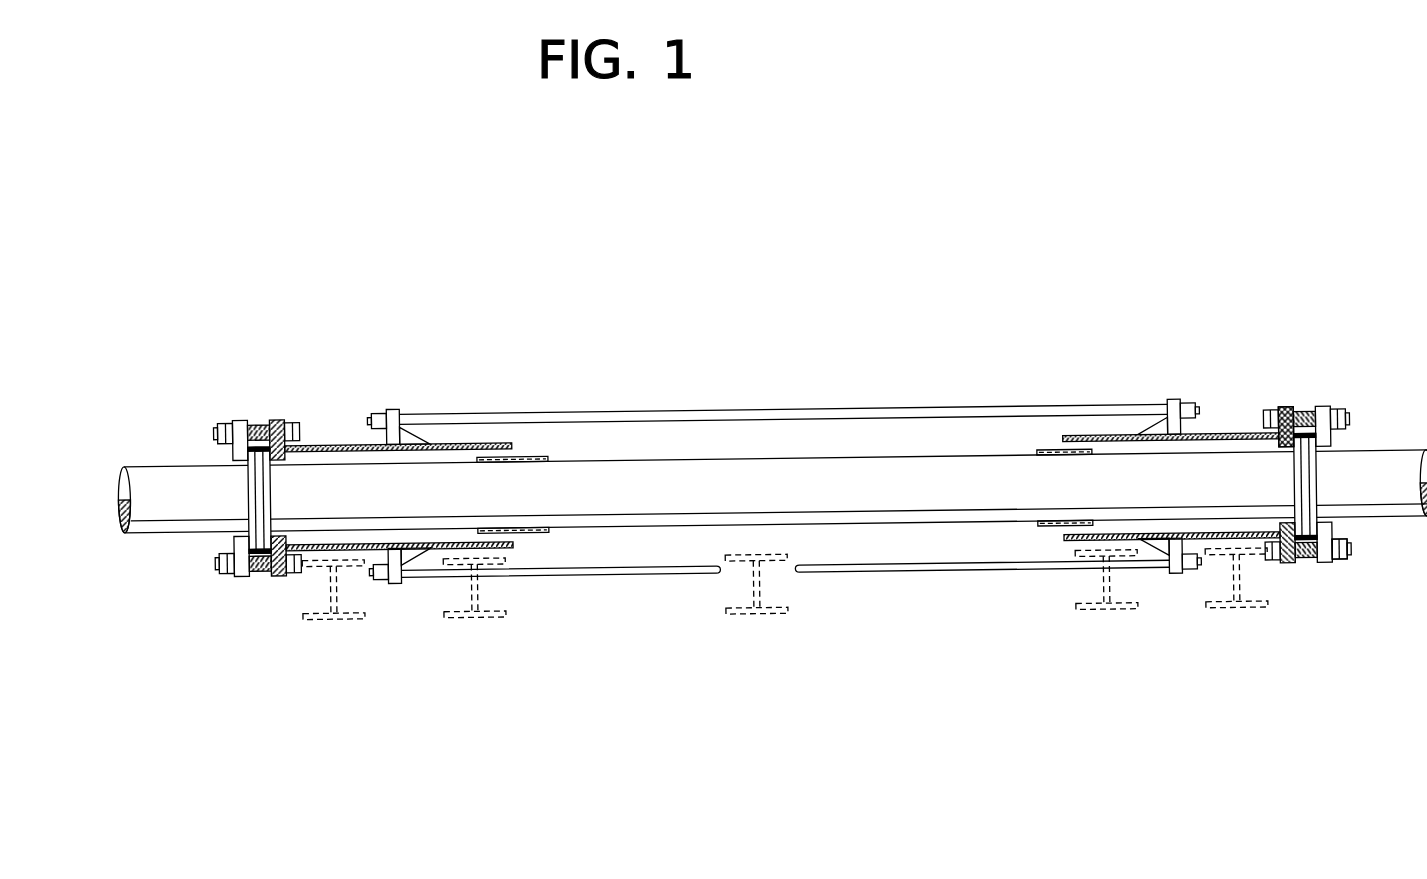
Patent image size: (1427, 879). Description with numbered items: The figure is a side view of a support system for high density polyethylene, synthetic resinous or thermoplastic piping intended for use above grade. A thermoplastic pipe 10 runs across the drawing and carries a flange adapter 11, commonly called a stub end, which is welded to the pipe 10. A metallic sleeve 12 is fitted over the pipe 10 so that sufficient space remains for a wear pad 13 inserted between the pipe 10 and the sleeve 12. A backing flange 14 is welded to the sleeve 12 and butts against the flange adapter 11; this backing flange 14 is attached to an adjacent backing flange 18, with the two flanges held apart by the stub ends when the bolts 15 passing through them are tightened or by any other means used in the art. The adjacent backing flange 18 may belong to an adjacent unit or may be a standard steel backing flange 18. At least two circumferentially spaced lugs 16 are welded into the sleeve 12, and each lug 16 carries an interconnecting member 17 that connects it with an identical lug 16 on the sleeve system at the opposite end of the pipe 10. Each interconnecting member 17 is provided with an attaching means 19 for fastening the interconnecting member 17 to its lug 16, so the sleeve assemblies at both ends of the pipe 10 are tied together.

The thermoplastic pipe 10 is at (842, 456).
The flange adapter 11 is at (1278, 492).
The metallic sleeve 12 is at (1216, 428).
The wear pad 13 is at (532, 537).
The backing flange 14 is at (1257, 427).
The bolts 15 is at (1345, 532).
The lug 16 is at (1156, 428).
The interconnecting member 17 is at (796, 402).
The adjacent backing flange 18 is at (223, 452).
The attaching means 19 is at (380, 588).